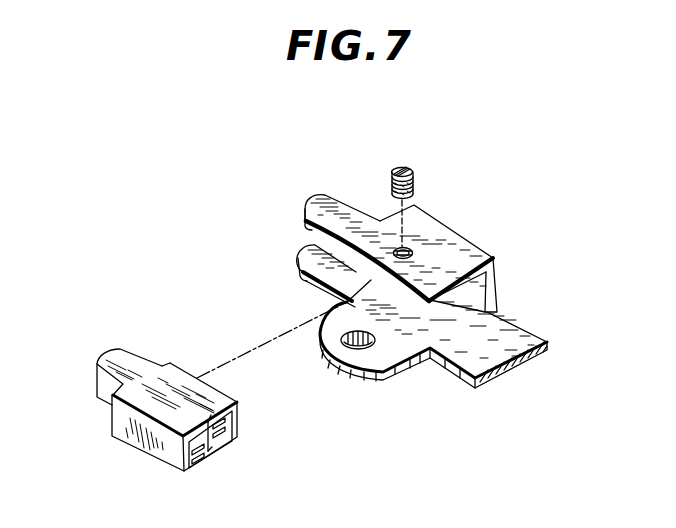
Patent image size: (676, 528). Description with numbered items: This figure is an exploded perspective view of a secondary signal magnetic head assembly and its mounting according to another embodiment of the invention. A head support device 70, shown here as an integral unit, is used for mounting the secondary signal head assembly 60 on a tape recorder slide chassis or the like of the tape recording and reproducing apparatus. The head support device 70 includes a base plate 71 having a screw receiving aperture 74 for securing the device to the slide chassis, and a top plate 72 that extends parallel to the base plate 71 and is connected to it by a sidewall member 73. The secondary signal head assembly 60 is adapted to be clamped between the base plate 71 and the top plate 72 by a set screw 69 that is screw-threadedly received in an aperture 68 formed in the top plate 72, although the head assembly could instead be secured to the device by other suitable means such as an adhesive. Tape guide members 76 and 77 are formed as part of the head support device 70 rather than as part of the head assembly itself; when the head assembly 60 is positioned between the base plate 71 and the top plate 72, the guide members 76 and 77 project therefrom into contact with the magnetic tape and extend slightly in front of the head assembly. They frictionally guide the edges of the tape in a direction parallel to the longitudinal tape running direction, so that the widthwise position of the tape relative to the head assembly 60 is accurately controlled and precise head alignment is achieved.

The secondary signal head assembly 60 is at (146, 348).
The aperture 68 is at (407, 249).
The set screw 69 is at (409, 167).
The head support device 70 is at (400, 271).
The base plate 71 is at (386, 338).
The top plate 72 is at (413, 235).
The sidewall member 73 is at (494, 289).
The screw receiving aperture 74 is at (358, 347).
The tape guide member 76 is at (296, 258).
The tape guide member 77 is at (303, 206).